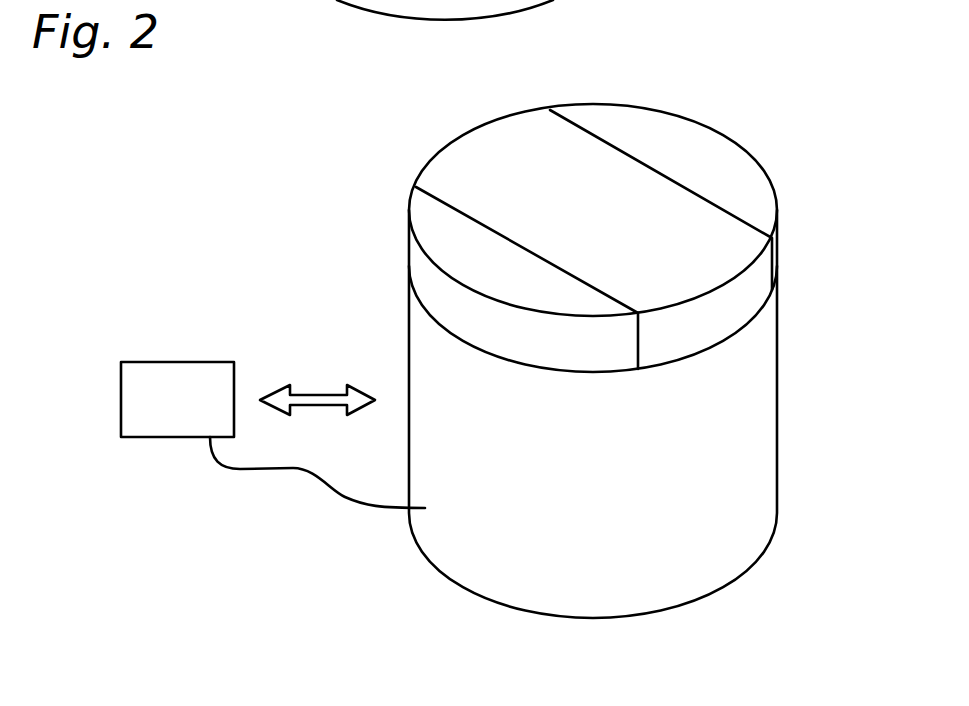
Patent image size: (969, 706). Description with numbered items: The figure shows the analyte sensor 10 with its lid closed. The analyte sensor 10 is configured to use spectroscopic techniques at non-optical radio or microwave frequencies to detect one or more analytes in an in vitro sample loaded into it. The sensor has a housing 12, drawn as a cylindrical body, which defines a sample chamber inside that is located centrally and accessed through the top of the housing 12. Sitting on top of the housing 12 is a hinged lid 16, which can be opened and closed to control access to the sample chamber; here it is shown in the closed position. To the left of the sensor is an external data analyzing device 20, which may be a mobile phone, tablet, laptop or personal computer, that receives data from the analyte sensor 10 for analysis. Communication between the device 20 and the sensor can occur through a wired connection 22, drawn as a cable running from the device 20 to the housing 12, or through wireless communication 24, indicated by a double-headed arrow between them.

The analyte sensor 10 is at (648, 329).
The housing 12 is at (782, 355).
The hinged lid 16 is at (493, 153).
The external data analyzing device 20 is at (143, 362).
The wired connection 22 is at (328, 490).
The wireless communication 24 is at (320, 390).